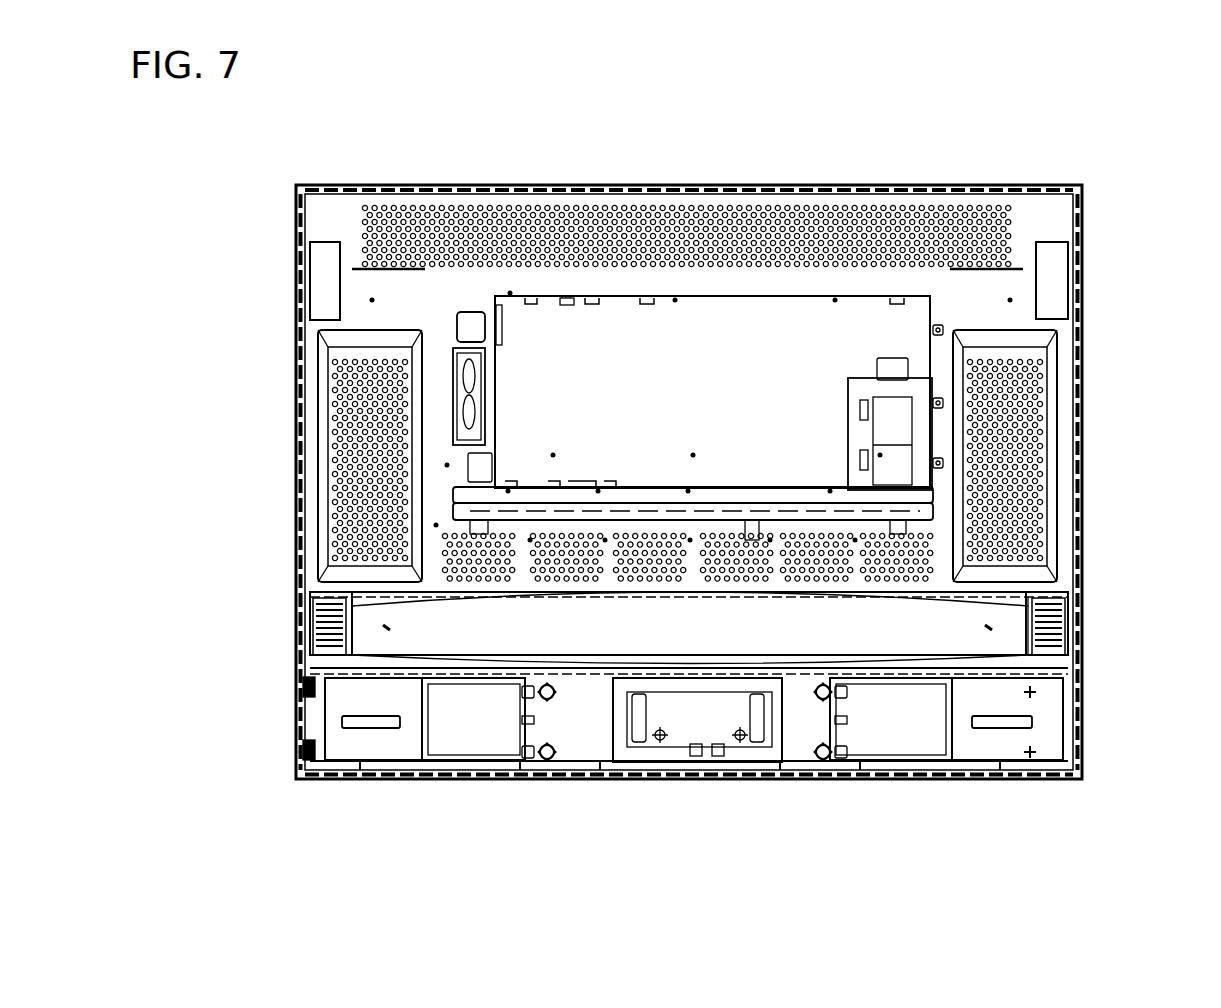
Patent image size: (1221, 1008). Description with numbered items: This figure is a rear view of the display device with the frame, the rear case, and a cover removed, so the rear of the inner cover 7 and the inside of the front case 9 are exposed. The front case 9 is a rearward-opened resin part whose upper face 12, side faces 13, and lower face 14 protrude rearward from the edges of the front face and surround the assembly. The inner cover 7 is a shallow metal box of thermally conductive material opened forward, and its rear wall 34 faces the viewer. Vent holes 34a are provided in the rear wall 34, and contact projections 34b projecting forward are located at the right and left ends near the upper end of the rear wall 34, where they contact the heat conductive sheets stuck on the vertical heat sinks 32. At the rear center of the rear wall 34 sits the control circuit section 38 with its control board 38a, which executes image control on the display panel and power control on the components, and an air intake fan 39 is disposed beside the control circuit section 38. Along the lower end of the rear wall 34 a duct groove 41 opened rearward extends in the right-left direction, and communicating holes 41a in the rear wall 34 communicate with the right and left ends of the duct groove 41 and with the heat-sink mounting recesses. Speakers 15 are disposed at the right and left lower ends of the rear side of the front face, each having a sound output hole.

The inner cover 7 is at (1040, 212).
The front case 9 is at (1058, 775).
The upper face 12 is at (888, 197).
The side faces 13 is at (297, 395).
The lower face 14 is at (982, 773).
The speakers 15 is at (485, 740).
The heat sinks 32 is at (297, 618).
The rear wall 34 is at (1020, 297).
The vent holes 34a is at (387, 243).
The contact projections 34b is at (312, 290).
The control circuit section 38 is at (540, 320).
The control board 38a is at (557, 307).
The air intake fan 39 is at (467, 380).
The duct groove 41 is at (423, 603).
The communicating holes 41a is at (312, 634).